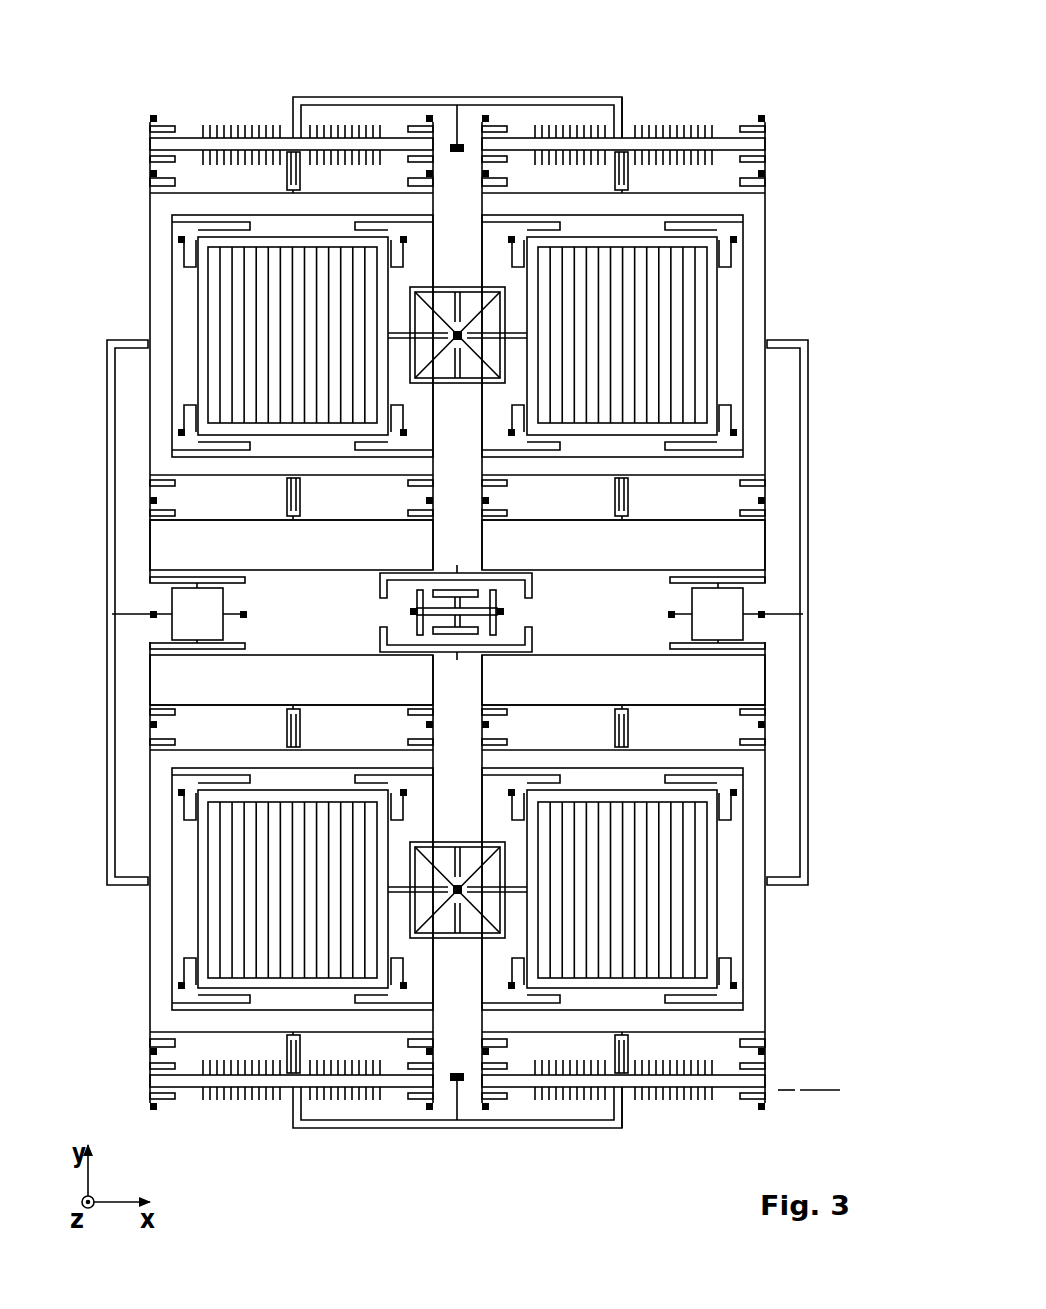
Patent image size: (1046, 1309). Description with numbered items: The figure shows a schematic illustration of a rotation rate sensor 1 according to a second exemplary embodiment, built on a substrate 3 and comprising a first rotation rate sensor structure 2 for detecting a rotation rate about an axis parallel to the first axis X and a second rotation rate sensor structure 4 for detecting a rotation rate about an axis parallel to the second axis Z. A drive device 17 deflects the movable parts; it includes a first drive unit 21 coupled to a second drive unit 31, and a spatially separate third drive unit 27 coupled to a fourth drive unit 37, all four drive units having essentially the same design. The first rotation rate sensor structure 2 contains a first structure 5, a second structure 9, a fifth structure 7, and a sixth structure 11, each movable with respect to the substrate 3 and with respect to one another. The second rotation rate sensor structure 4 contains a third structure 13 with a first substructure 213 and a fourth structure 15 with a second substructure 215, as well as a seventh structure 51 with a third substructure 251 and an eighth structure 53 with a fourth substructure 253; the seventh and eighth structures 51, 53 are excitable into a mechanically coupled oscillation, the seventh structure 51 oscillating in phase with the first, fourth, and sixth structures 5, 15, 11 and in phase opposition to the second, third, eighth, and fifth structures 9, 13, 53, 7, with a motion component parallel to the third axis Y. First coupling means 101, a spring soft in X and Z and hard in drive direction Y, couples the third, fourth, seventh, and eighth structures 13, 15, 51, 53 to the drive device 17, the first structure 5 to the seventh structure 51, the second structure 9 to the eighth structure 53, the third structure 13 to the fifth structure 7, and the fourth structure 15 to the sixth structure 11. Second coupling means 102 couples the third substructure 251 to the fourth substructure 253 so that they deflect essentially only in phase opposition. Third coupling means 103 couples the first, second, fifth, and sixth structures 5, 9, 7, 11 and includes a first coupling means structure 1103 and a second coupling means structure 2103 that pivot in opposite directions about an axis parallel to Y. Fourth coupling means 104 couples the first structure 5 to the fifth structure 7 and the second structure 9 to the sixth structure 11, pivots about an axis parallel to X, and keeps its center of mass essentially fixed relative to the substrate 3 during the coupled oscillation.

The rotation rate sensor 1 is at (772, 66).
The first rotation rate sensor structure 2 is at (770, 515).
The substrate 3 is at (809, 1075).
The second rotation rate sensor structure 4 is at (770, 222).
The first structure 5 is at (146, 548).
The fifth structure 7 is at (146, 683).
The second structure 9 is at (770, 547).
The sixth structure 11 is at (770, 680).
The third structure 13 is at (146, 977).
The fourth structure 15 is at (770, 968).
The drive device 17 is at (270, 98).
The first drive unit 21 is at (288, 98).
The third drive unit 27 is at (288, 1130).
The second drive unit 31 is at (628, 98).
The fourth drive unit 37 is at (628, 1130).
The seventh structure 51 is at (146, 255).
The eighth structure 53 is at (770, 255).
The first coupling means 101 is at (284, 183).
The second coupling means 102 is at (457, 284).
The third coupling means 103 is at (378, 602).
The fourth coupling means 104 is at (252, 616).
The first substructure 213 is at (198, 926).
The second substructure 215 is at (717, 925).
The third substructure 251 is at (198, 300).
The fourth substructure 253 is at (717, 300).
The first coupling means structure 1103 is at (457, 568).
The second coupling means structure 2103 is at (457, 657).